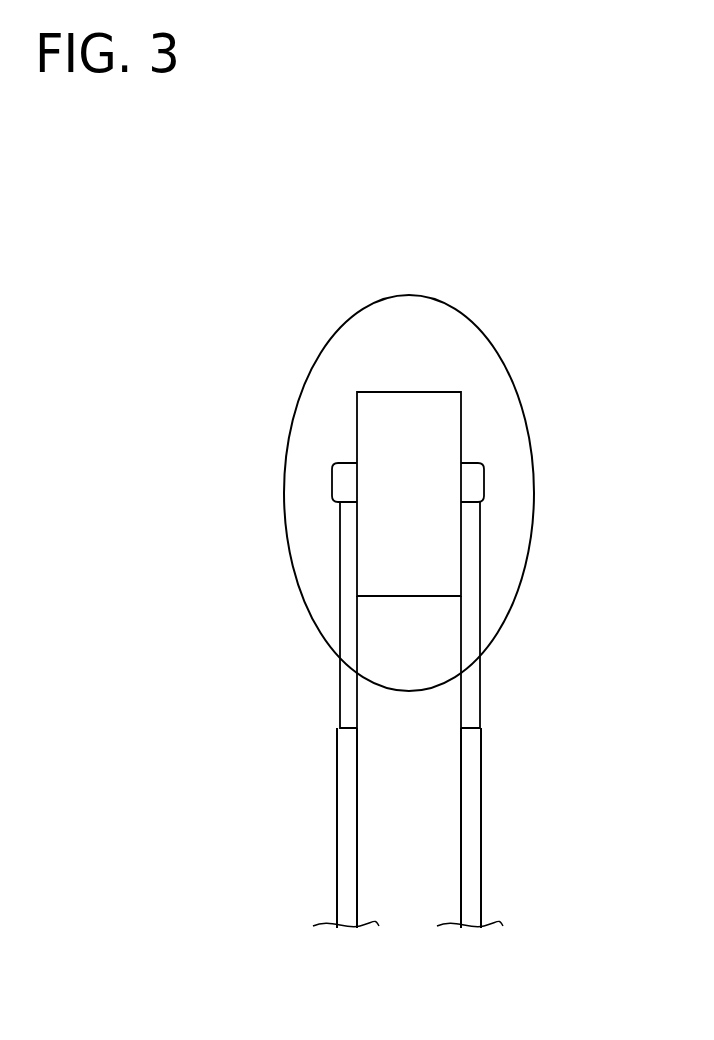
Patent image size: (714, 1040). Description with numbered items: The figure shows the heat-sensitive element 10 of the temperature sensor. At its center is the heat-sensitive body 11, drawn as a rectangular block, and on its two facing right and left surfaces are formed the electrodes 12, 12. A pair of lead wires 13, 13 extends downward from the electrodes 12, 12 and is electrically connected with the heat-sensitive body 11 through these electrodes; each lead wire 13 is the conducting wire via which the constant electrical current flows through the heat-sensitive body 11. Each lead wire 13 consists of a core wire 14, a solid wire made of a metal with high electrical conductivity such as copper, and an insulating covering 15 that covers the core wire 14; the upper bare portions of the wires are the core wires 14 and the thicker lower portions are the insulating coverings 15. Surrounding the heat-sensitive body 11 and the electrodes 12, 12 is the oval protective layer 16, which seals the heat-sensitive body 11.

The heat-sensitive element 10 is at (488, 318).
The heat-sensitive body 11 is at (461, 428).
The electrodes 12 is at (332, 486).
The lead wires 13 is at (337, 791).
The core wire 14 is at (340, 715).
The insulating covering 15 is at (409, 828).
The protective layer 16 is at (510, 377).